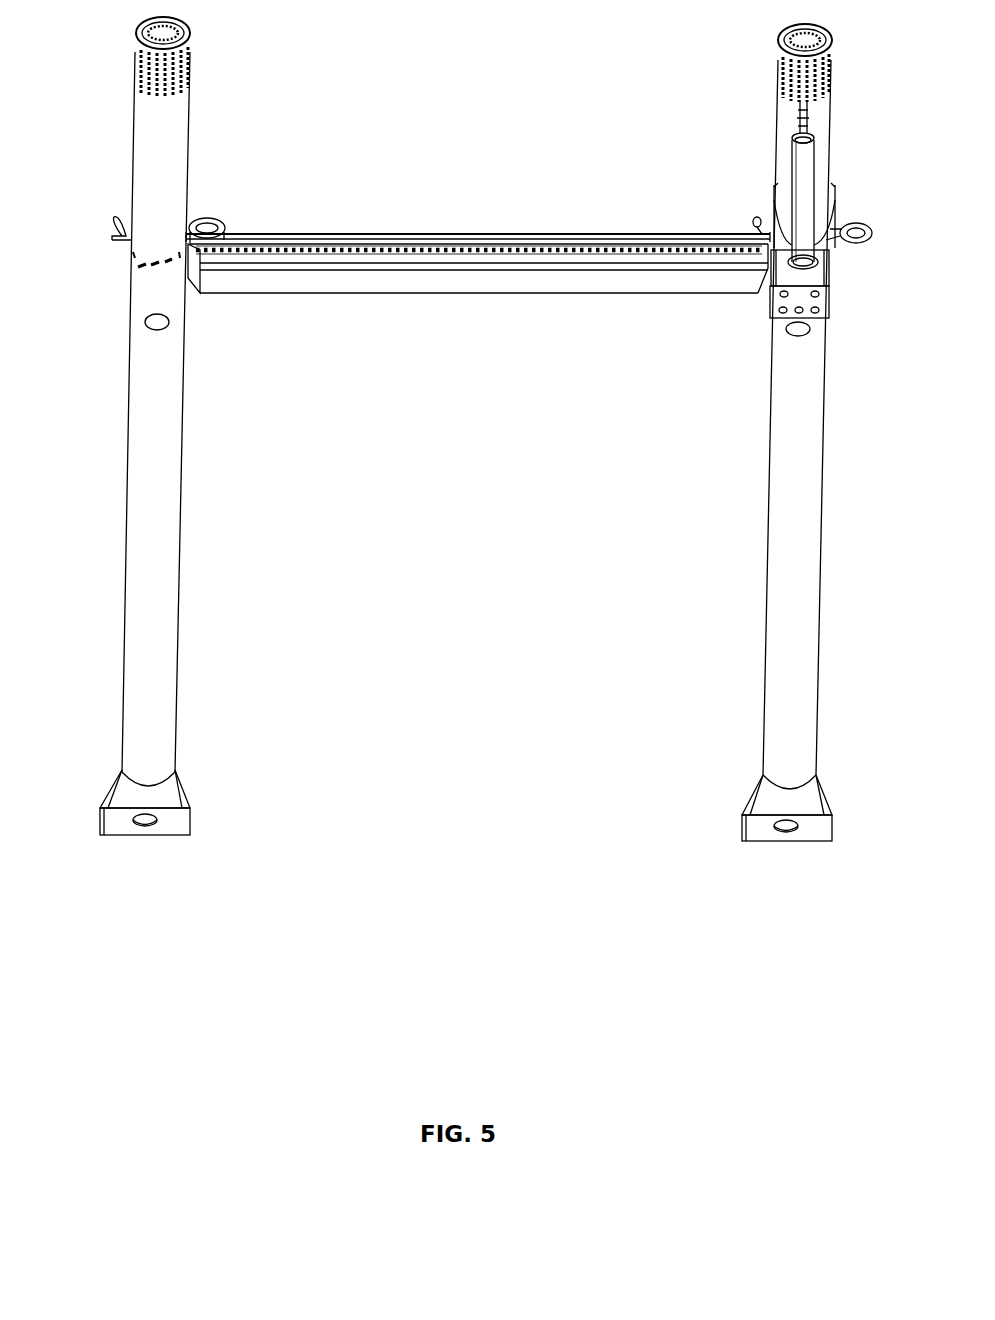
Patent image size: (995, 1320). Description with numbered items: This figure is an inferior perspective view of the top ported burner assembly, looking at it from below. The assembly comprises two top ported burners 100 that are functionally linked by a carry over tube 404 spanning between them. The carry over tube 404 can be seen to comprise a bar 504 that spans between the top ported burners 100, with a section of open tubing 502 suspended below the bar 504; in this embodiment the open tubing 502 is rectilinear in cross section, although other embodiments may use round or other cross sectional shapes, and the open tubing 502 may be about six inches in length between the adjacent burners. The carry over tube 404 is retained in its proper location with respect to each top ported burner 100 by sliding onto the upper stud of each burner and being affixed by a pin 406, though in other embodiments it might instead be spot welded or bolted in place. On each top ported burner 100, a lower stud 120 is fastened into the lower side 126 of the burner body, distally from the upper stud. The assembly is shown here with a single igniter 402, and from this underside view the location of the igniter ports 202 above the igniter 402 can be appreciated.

The top ported burner 100 is at (158, 530).
The lower side 126 is at (163, 597).
The lower stud 120 is at (160, 325).
The igniter ports 202 is at (143, 265).
The igniter 402 is at (793, 228).
The carry over tube 404 is at (360, 283).
The pin 406 is at (212, 218).
The open tubing 502 is at (411, 282).
The bar 504 is at (288, 233).